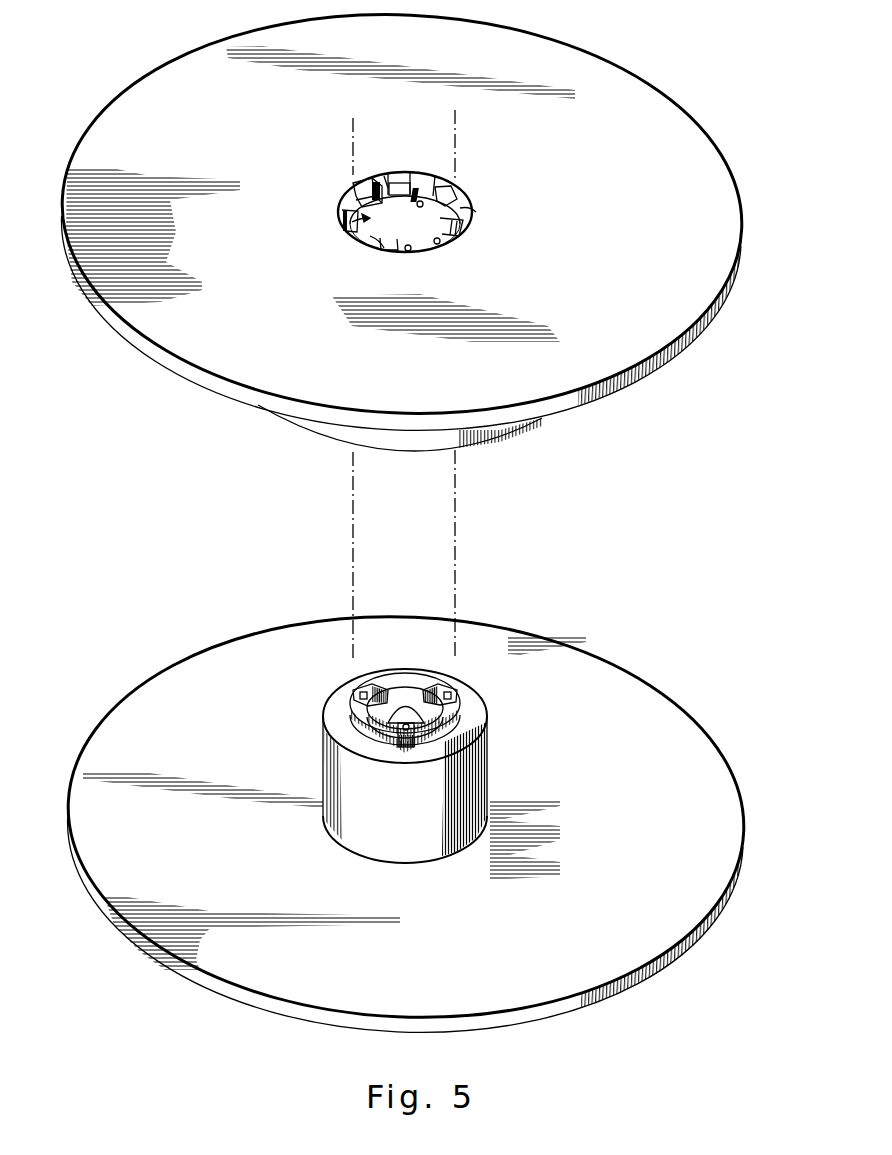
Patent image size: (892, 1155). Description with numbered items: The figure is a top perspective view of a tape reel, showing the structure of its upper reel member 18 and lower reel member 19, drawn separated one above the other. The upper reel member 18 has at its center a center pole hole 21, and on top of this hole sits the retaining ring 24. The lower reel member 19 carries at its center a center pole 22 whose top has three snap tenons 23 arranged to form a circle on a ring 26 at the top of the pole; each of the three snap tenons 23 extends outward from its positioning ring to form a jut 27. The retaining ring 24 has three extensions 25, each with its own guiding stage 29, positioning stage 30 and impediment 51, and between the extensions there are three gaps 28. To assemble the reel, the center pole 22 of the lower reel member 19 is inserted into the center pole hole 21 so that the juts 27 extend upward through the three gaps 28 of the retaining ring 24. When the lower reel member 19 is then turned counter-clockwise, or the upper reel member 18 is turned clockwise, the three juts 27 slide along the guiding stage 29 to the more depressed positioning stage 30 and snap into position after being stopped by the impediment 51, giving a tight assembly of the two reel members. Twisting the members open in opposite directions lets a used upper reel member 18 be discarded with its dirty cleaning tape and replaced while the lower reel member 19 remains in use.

The upper reel member 18 is at (618, 293).
The lower reel member 19 is at (608, 870).
The center pole hole 21 is at (430, 215).
The center pole 22 is at (482, 780).
The snap tenons 23 is at (360, 684).
The retaining ring 24 is at (344, 182).
The extensions 25 is at (462, 226).
The annular ring 26 is at (452, 728).
The juts 27 is at (360, 694).
The gaps 28 is at (350, 195).
The guiding stage 29 is at (420, 201).
The positioning stage 30 is at (399, 182).
The impediment 51 is at (386, 180).